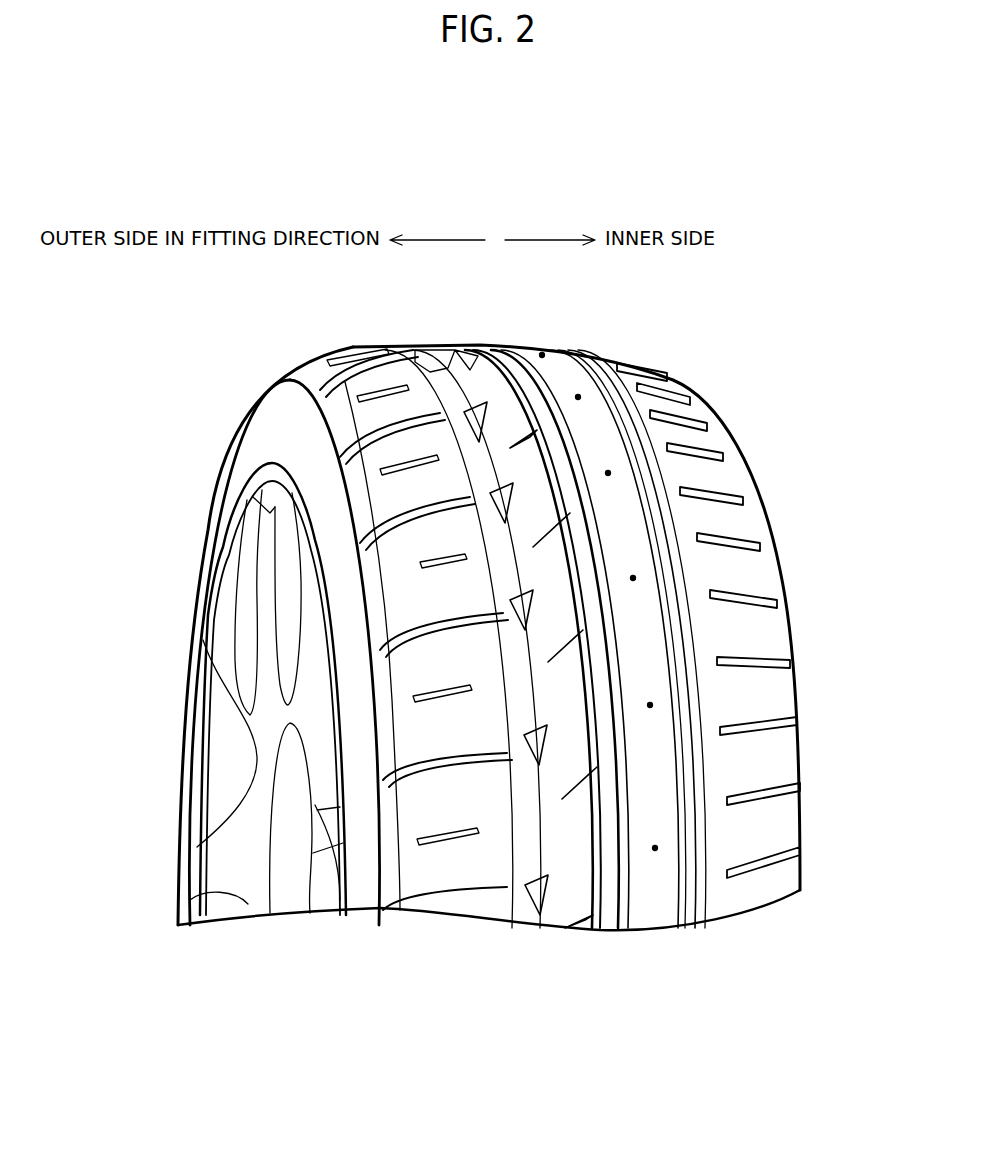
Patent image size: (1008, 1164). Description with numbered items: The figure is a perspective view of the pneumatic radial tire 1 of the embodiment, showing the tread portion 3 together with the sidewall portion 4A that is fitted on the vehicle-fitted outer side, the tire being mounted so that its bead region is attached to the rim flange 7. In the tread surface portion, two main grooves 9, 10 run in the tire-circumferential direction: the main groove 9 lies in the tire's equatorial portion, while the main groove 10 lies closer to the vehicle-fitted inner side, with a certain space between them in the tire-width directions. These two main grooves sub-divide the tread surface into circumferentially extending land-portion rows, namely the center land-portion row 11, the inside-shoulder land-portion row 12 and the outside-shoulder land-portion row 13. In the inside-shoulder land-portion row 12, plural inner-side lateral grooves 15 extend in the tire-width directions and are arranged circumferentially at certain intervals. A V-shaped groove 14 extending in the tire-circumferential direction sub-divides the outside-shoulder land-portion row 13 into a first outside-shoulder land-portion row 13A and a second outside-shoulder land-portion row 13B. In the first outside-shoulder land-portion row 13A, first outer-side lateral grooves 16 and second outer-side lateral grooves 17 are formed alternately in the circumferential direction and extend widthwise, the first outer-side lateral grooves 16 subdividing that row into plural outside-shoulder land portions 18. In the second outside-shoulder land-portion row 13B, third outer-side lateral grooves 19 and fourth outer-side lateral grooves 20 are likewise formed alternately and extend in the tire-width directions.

The pneumatic radial tire 1 is at (243, 369).
The tread portion 3 is at (326, 337).
The sidewall portion 4A is at (238, 423).
The rim flange 7 is at (262, 483).
The main groove 9 is at (610, 897).
The main groove 10 is at (660, 533).
The center land-portion row 11 is at (623, 490).
The inside-shoulder land-portion row 12 is at (743, 620).
The outside-shoulder land-portion row 13 is at (349, 667).
The first outside-shoulder land-portion row 13A is at (473, 913).
The second outside-shoulder land-portion row 13B is at (572, 912).
The V-shaped groove 14 is at (522, 917).
The inner-side lateral groove 15 is at (743, 593).
The first outer-side lateral groove 16 is at (385, 770).
The second outer-side lateral groove 17 is at (403, 568).
The outside-shoulder land portion 18 is at (402, 552).
The third outer-side lateral groove 19 is at (515, 418).
The fourth outer-side lateral groove 20 is at (448, 358).